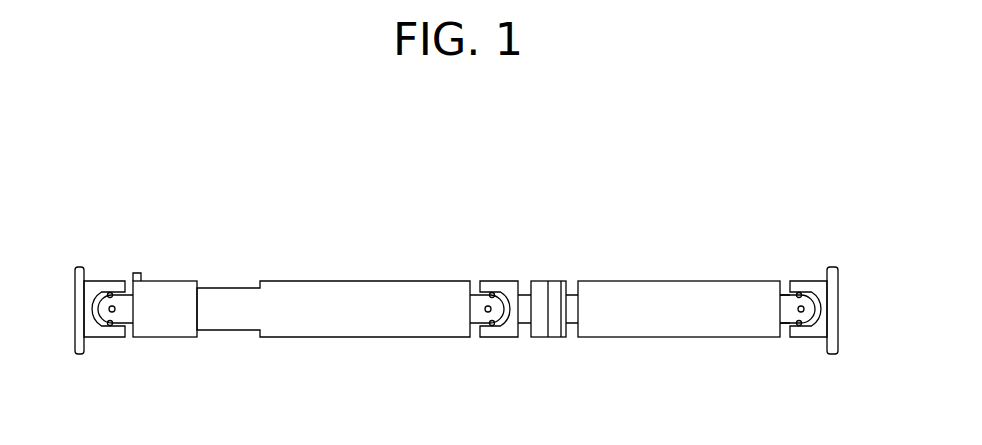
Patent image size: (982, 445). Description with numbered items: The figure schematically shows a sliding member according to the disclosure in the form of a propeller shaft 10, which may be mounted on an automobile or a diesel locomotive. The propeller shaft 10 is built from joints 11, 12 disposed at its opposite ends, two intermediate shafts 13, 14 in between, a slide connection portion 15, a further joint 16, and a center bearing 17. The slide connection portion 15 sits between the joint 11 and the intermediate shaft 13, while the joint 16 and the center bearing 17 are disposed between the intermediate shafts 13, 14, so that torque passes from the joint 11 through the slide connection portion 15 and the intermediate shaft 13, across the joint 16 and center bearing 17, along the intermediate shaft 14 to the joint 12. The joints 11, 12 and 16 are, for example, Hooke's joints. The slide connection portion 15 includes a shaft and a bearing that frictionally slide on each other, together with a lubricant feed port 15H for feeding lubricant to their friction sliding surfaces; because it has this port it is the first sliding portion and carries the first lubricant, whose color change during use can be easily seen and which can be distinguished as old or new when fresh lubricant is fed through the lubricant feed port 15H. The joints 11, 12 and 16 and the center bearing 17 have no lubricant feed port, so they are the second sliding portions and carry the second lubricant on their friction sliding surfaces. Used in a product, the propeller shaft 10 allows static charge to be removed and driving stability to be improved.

The propeller shaft 10 is at (488, 155).
The joint 11 is at (98, 280).
The joint 12 is at (812, 281).
The intermediate shaft 13 is at (367, 338).
The intermediate shaft 14 is at (693, 338).
The slide connection portion 15 is at (167, 338).
The lubricant feed port 15H is at (136, 273).
The joint 16 is at (498, 281).
The center bearing 17 is at (548, 338).